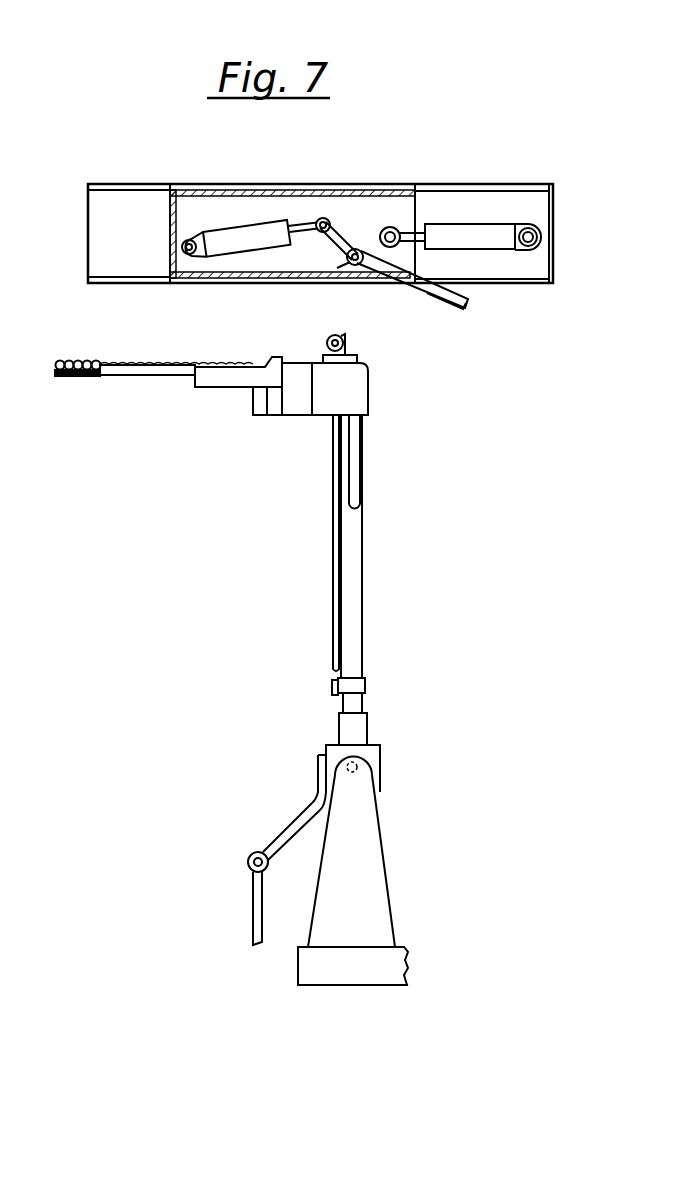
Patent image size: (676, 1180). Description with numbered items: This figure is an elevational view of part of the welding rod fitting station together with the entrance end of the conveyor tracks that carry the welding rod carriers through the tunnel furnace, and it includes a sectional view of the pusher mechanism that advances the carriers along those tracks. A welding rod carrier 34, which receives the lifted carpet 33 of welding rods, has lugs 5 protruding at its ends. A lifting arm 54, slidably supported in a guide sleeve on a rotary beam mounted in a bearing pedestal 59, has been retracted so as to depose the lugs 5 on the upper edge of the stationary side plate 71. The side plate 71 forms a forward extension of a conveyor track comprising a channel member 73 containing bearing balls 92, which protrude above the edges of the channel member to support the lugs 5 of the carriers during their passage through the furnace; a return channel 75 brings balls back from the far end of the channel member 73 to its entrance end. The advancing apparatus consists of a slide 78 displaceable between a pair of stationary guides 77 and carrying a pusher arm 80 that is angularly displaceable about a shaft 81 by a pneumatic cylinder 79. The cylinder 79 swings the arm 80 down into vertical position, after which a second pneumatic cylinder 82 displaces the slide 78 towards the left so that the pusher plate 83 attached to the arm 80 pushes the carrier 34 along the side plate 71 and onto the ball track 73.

The stationary guides 77 is at (469, 184).
The slide 78 is at (170, 217).
The pneumatic cylinder 79 is at (236, 232).
The pusher arm 80 is at (416, 279).
The shaft 81 is at (329, 279).
The second pneumatic cylinder 82 is at (494, 243).
The pusher plate 83 is at (448, 312).
The bearing balls 92 is at (85, 361).
The channel member 73 is at (145, 376).
The return channel 75 is at (213, 380).
The stationary side plate 71 is at (357, 385).
The lug 5 is at (352, 356).
The welding rod carrier 34 is at (327, 345).
The carpet of welding rods 33 is at (333, 475).
The lifting arm 54 is at (361, 521).
The bearing pedestal 59 is at (370, 835).